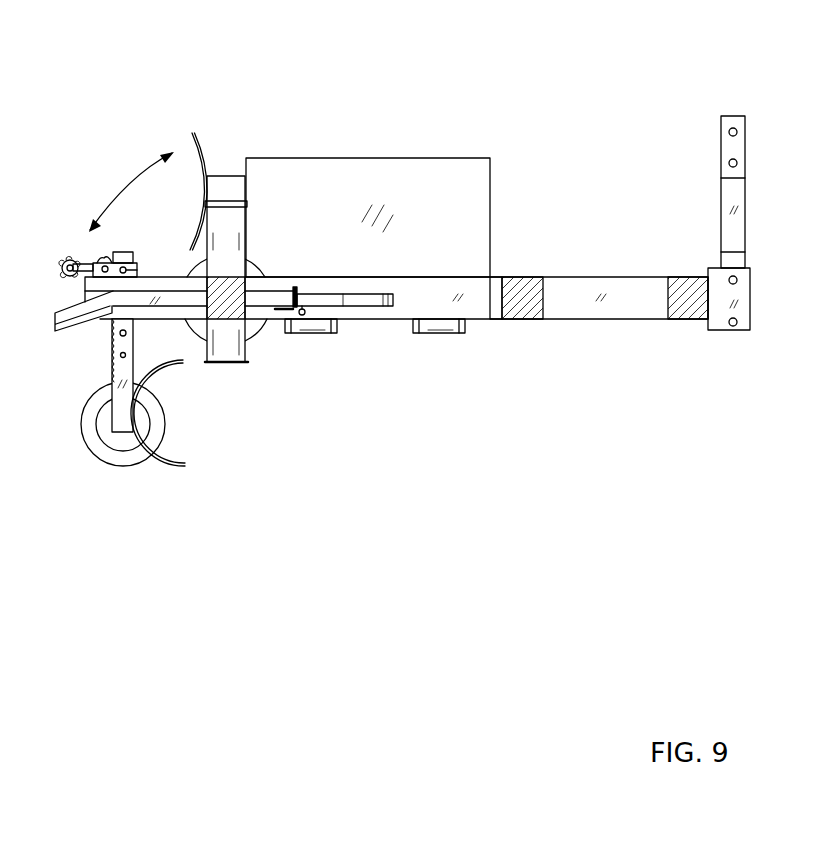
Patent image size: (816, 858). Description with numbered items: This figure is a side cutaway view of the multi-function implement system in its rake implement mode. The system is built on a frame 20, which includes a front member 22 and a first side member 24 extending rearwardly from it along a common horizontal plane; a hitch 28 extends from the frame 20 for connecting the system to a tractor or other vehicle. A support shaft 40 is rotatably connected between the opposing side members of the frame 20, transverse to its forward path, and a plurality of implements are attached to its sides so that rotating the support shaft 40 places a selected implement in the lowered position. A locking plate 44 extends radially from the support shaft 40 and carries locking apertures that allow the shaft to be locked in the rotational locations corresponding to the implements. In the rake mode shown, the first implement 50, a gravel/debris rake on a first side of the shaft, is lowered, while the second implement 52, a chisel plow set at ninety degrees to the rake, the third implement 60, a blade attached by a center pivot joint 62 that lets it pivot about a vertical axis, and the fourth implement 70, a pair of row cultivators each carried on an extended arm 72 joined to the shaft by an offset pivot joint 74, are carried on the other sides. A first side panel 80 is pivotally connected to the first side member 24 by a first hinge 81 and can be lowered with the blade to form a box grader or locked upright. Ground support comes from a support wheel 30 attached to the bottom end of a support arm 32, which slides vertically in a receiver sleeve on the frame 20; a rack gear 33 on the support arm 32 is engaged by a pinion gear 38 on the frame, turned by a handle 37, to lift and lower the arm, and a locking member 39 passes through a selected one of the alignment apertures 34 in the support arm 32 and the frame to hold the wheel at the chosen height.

The frame 20 is at (605, 278).
The front member 22 is at (527, 298).
The first side member 24 is at (485, 310).
The hitch 28 is at (721, 200).
The support wheel 30 is at (138, 465).
The support arm 32 is at (123, 432).
The rack gear 33 is at (112, 328).
The alignment apertures 34 is at (123, 356).
The handle 37 is at (74, 258).
The pinion gear 38 is at (105, 257).
The locking member 39 is at (135, 273).
The support shaft 40 is at (228, 297).
The locking plate 44 is at (197, 322).
The first implement 50 is at (200, 372).
The second implement 52 is at (58, 305).
The third implement 60 is at (203, 135).
The center pivot joint 62 is at (229, 176).
The fourth implement 70 is at (368, 312).
The extended arm 72 is at (283, 310).
The offset pivot joint 74 is at (268, 312).
The first side panel 80 is at (420, 158).
The first hinge 81 is at (448, 333).